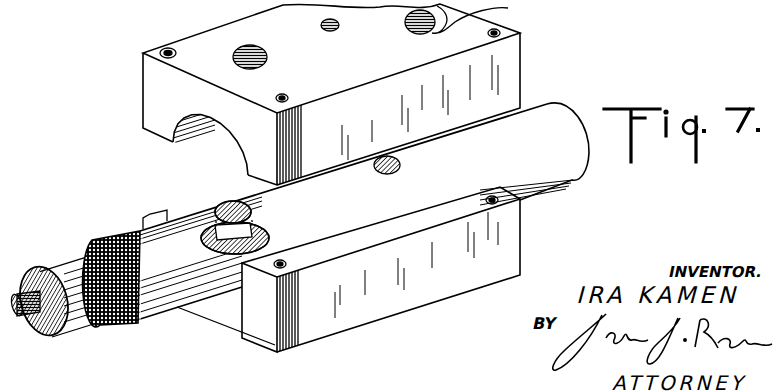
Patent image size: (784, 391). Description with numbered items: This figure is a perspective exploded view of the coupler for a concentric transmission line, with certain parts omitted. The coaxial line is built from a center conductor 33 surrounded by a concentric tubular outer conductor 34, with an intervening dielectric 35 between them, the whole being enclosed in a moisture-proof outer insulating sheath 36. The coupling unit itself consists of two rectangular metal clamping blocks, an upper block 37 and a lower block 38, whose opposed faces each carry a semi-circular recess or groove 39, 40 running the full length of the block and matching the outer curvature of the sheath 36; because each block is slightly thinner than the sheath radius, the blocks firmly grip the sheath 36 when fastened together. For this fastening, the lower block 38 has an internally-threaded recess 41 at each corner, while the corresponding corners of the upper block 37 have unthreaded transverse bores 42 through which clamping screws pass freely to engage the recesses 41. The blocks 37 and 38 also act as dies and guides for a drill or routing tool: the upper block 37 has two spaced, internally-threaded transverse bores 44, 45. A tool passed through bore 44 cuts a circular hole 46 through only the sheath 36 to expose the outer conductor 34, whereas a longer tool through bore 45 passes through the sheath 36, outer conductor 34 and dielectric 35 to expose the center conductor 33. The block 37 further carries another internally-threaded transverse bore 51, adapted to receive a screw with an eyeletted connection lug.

The center conductor 33 is at (14, 290).
The outer conductor 34 is at (83, 256).
The dielectric 35 is at (50, 259).
The outer insulating sheath 36 is at (120, 236).
The upper clamping block 37 is at (152, 90).
The lower clamping block 38 is at (313, 325).
The semi-circular recess 39 is at (215, 138).
The semi-circular recess 40 is at (238, 258).
The internally-threaded recess 41 is at (160, 213).
The transverse bore 42 is at (164, 49).
The internally-threaded bore 44 is at (486, 17).
The internally-threaded bore 45 is at (241, 48).
The circular hole 46 is at (390, 174).
The internally-threaded transverse bore 51 is at (330, 31).